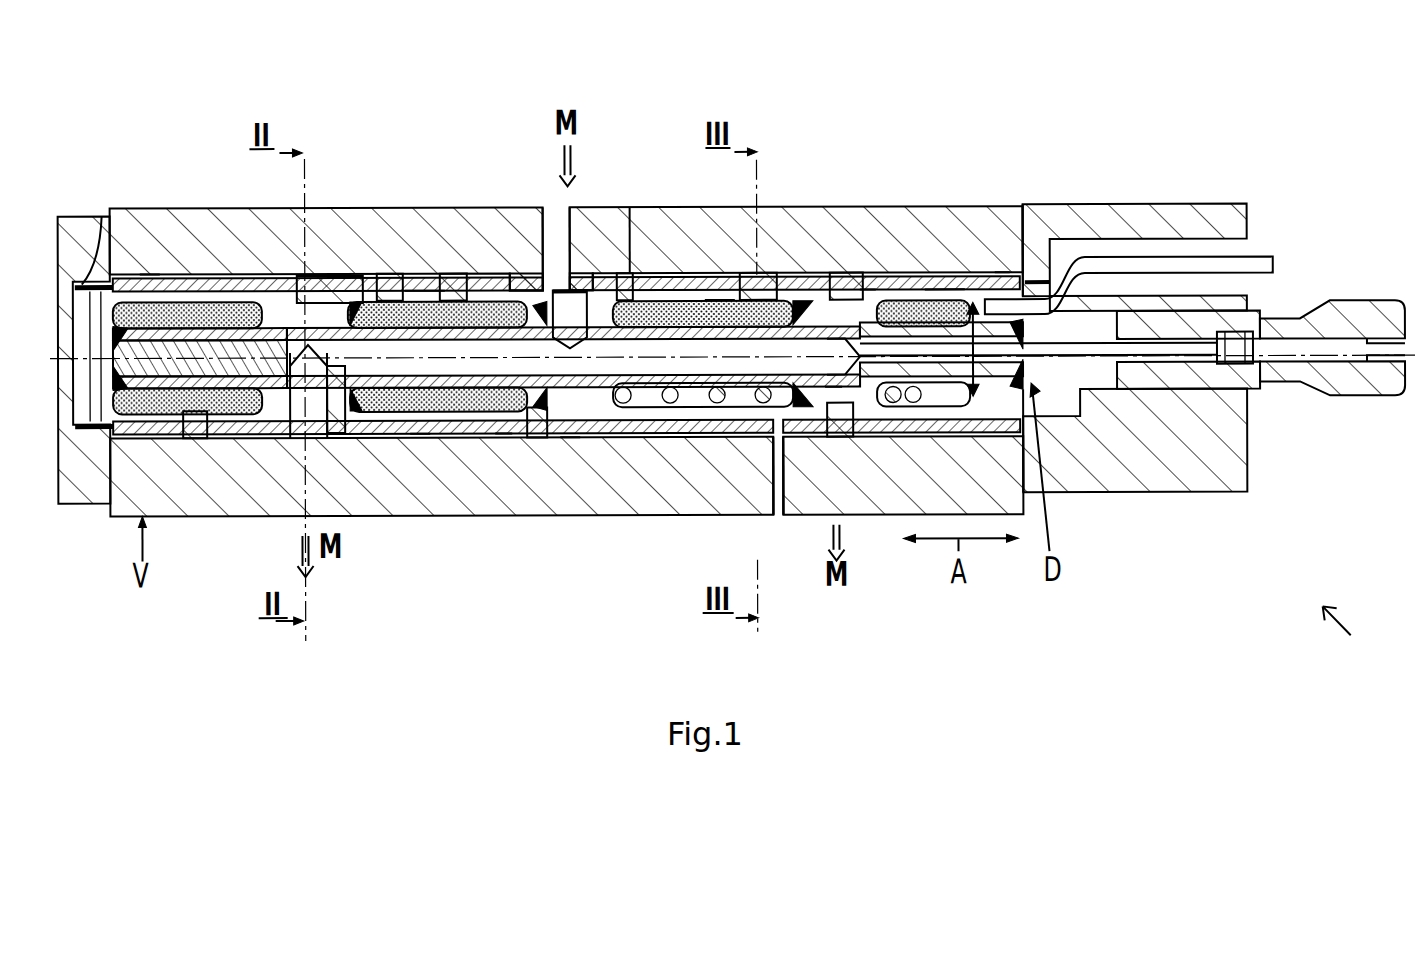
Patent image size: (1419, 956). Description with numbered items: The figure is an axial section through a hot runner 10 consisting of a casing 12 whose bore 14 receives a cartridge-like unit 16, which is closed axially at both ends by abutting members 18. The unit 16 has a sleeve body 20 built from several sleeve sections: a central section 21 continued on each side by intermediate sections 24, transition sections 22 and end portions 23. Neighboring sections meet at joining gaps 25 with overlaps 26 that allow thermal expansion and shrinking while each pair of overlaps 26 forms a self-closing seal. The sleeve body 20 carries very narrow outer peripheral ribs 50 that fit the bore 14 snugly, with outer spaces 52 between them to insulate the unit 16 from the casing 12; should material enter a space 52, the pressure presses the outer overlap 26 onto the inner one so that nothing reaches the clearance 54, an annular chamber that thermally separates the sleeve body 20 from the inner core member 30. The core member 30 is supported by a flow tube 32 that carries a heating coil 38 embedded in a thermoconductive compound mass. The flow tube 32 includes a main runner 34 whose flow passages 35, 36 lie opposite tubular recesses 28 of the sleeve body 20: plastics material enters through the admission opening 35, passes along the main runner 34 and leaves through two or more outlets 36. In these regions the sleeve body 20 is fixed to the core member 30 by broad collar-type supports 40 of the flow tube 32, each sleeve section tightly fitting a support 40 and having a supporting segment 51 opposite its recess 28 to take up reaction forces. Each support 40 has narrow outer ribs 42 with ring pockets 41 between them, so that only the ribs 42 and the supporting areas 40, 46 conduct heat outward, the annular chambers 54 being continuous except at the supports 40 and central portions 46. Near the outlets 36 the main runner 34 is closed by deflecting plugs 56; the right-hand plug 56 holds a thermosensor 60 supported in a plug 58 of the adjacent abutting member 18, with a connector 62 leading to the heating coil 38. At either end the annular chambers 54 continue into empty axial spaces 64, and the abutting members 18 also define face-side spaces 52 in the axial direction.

The hot runner 10 is at (1354, 642).
The casing 12 is at (221, 515).
The bore 14 is at (782, 515).
The cartridge-like unit 16 is at (1088, 420).
The abutting member 18 is at (80, 502).
The sleeve body 20 is at (66, 205).
The central section 21 is at (607, 515).
The transition section 22 is at (371, 275).
The end portion 23 is at (150, 280).
The intermediate section 24 is at (696, 205).
The joining gap 25 is at (683, 216).
The overlap 26 is at (438, 300).
The tubular recess 28 is at (588, 205).
The core member 30 is at (479, 288).
The flow tube 32 is at (420, 437).
The main runner 34 is at (503, 437).
The admission opening 35 is at (588, 303).
The outlet 36 is at (350, 520).
The heating coil 38 is at (660, 437).
The collar-type support 40 is at (622, 369).
The ring pocket 41 is at (327, 285).
The outer rib 42 is at (868, 285).
The central portion 46 is at (541, 207).
The outer peripheral rib 50 is at (213, 280).
The supporting segment 51 is at (828, 290).
The outer space 52 is at (720, 300).
The annular chamber 54 is at (103, 283).
The deflecting plug 56 is at (190, 365).
The plug 58 is at (1361, 302).
The thermosensor 60 is at (1097, 350).
The connector 62 is at (1254, 268).
The axial space 64 is at (1050, 403).